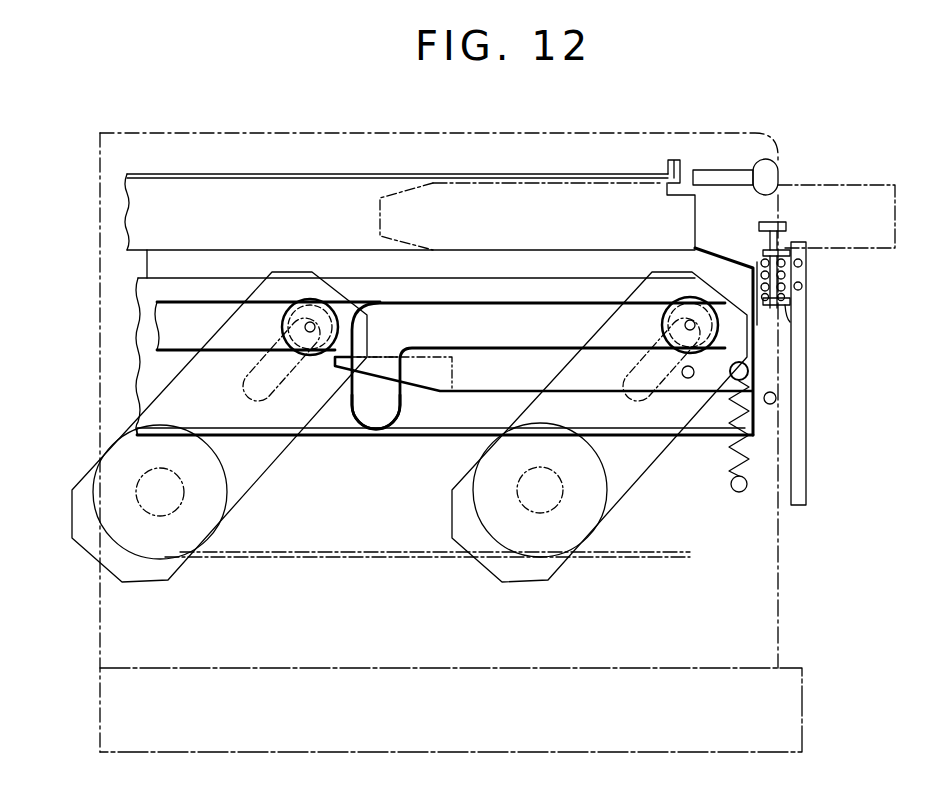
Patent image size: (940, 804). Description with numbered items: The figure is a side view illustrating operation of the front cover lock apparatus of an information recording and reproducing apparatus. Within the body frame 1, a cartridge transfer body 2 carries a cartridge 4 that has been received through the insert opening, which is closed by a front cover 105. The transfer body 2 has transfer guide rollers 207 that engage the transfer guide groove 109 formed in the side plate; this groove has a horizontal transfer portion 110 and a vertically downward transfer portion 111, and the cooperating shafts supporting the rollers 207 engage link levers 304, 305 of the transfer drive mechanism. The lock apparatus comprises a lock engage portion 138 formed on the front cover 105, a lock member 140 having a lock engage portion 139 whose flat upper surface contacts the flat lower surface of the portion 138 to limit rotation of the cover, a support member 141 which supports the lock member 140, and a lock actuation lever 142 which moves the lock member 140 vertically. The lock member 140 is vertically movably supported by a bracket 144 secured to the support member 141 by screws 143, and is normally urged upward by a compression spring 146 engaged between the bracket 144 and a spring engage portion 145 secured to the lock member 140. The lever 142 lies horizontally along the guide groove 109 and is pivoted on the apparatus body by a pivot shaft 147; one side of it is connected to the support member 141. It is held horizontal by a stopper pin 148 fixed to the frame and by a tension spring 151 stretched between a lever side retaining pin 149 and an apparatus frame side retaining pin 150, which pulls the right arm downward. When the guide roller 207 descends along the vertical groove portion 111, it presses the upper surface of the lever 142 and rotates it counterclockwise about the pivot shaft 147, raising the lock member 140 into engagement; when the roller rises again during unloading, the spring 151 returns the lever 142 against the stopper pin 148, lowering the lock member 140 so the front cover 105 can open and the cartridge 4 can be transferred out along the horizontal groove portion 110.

The body frame 1 is at (597, 148).
The cartridge transfer body 2 is at (348, 185).
The cartridge 4 is at (887, 216).
The front cover 105 is at (720, 170).
The transfer guide groove 109 is at (500, 312).
The horizontal transfer portion 110 is at (421, 305).
The vertically downward transfer portion 111 is at (363, 400).
The lock engage portion 138 is at (770, 170).
The lock engage portion 139 is at (787, 228).
The lock member 140 is at (802, 286).
The support member 141 is at (807, 470).
The lock actuation lever 142 is at (430, 378).
The screws 143 is at (802, 263).
The bracket 144 is at (787, 310).
The spring engage portion 145 is at (763, 258).
The compression spring 146 is at (777, 335).
The pivot shaft 147 is at (686, 379).
The stopper pin 148 is at (776, 399).
The lever side retaining pin 149 is at (748, 370).
The apparatus frame side retaining pin 150 is at (740, 493).
The spring 151 is at (735, 469).
The transfer guide roller 207 is at (310, 299).
The link lever 304 is at (620, 500).
The link lever 305 is at (232, 508).